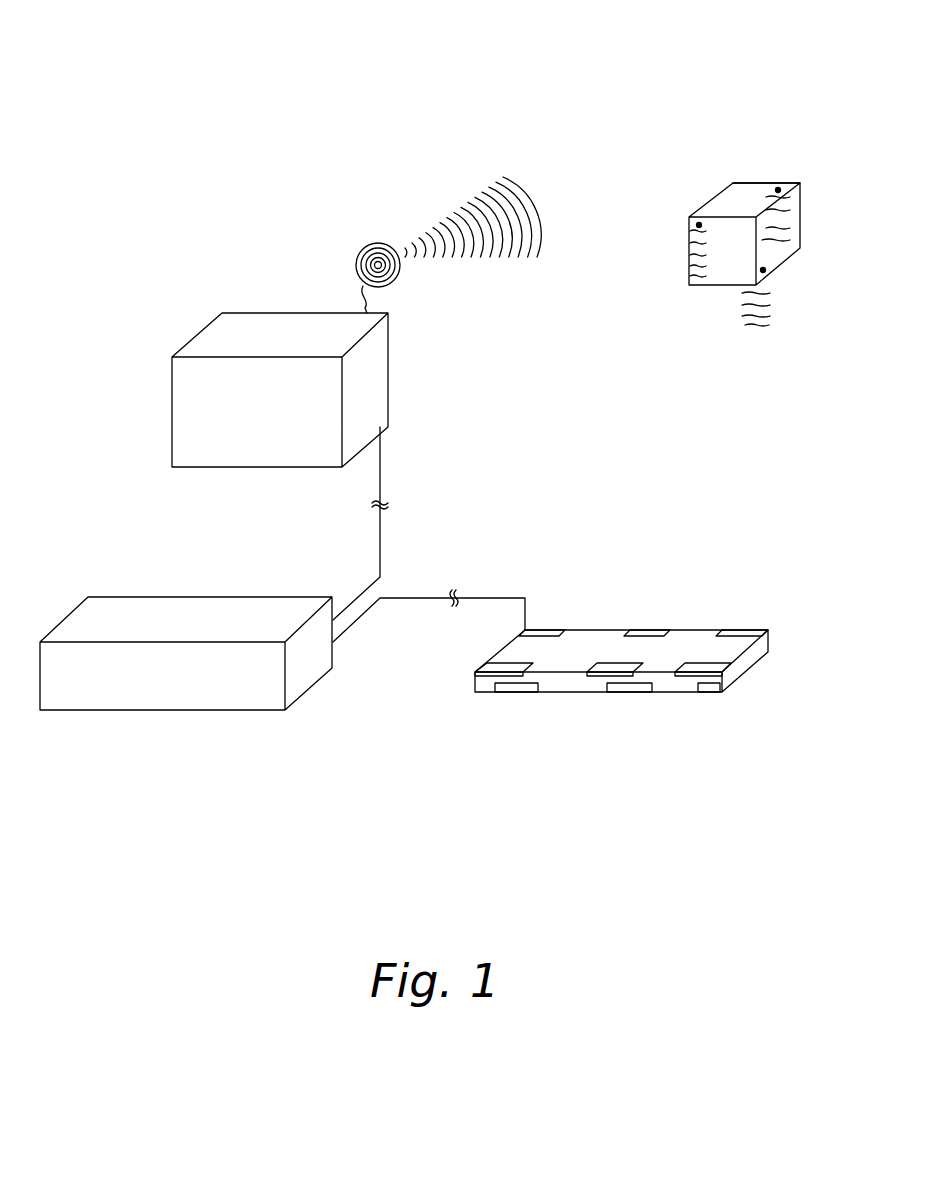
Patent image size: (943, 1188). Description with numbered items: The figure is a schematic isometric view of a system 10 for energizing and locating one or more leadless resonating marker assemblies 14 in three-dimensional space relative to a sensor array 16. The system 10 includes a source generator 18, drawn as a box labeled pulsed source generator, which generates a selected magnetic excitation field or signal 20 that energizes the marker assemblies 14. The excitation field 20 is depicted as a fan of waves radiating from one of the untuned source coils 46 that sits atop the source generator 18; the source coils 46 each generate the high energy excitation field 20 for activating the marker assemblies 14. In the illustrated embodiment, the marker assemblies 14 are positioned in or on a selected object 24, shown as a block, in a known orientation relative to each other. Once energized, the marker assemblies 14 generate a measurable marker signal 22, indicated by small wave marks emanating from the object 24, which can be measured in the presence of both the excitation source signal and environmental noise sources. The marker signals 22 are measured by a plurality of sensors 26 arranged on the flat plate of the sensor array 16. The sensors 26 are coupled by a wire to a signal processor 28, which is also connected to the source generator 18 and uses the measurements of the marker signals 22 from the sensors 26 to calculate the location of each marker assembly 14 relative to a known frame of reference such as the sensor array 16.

The system 10 is at (668, 67).
The leadless resonating marker assembly 14 is at (778, 188).
The sensor array 16 is at (710, 578).
The source generator 18 is at (265, 245).
The magnetic excitation field 20 is at (483, 193).
The marker signal 22 is at (788, 228).
The selected object 24 is at (733, 182).
The sensor 26 is at (540, 628).
The signal processor 28 is at (312, 685).
The untuned source coil 46 is at (374, 243).